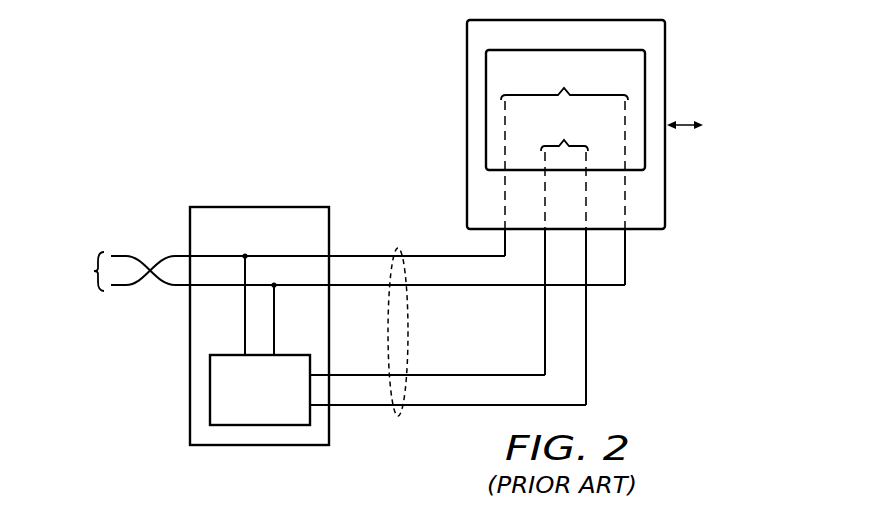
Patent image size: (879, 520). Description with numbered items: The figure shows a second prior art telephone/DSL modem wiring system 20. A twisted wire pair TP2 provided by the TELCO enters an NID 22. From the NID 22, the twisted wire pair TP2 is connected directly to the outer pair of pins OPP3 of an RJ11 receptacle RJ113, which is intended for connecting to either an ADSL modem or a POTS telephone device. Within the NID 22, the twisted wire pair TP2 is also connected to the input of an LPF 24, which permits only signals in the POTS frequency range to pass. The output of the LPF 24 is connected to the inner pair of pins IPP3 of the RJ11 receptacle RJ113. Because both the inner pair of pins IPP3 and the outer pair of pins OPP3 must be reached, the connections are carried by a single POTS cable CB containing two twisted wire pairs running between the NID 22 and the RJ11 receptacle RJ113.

The telephone/DSL modem wiring system 20 is at (165, 75).
The NID 22 is at (258, 206).
The LPF 24 is at (274, 416).
The twisted wire pair TP2 is at (142, 304).
The POTS cable CB is at (398, 250).
The RJ11 receptacle RJ113 is at (666, 50).
The outer pair of pins OPP3 is at (564, 173).
The inner pair of pins IPP3 is at (564, 259).